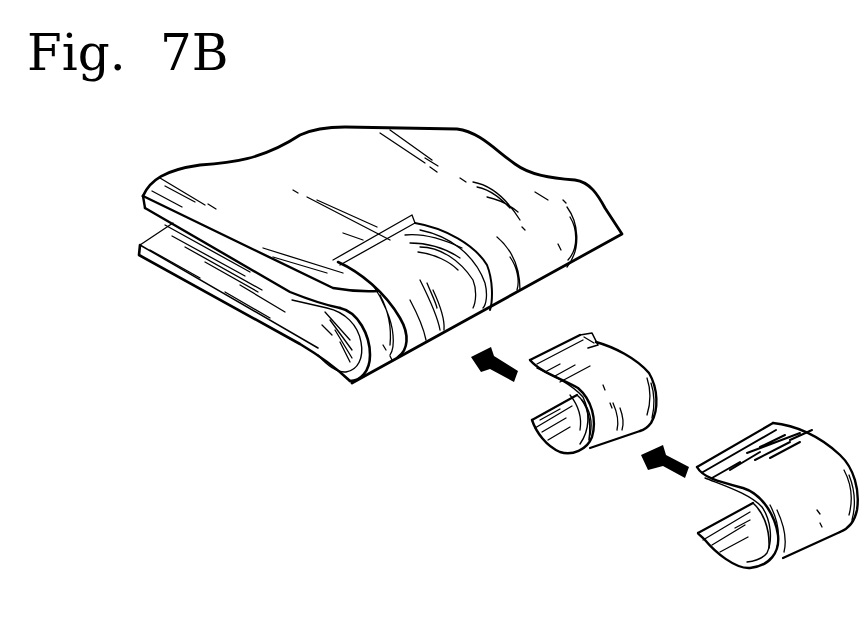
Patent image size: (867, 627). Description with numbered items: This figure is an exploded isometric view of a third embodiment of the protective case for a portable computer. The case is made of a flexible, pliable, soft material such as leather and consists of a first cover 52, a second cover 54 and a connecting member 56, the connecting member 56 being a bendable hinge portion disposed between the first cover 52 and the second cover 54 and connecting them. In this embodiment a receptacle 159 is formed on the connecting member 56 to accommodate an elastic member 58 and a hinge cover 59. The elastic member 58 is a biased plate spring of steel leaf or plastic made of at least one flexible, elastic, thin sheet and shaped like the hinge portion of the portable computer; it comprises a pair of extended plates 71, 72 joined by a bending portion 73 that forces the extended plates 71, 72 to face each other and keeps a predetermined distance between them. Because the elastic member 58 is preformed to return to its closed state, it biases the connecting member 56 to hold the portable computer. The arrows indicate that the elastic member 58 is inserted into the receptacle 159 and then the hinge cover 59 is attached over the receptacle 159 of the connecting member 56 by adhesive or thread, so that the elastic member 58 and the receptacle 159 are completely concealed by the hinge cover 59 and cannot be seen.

The first cover 52 is at (378, 157).
The second cover 54 is at (260, 323).
The connecting member 56 is at (400, 370).
The receptacle 159 is at (450, 310).
The elastic member 58 is at (626, 397).
The extended plate 71 is at (592, 340).
The extended plate 72 is at (540, 428).
The bending portion 73 is at (610, 425).
The hinge cover 59 is at (805, 537).